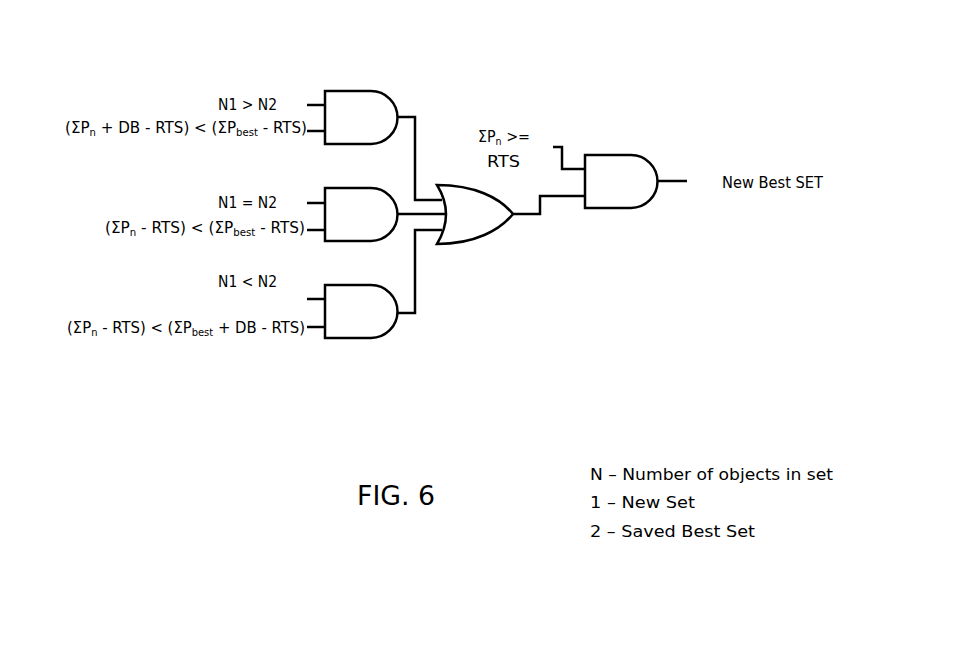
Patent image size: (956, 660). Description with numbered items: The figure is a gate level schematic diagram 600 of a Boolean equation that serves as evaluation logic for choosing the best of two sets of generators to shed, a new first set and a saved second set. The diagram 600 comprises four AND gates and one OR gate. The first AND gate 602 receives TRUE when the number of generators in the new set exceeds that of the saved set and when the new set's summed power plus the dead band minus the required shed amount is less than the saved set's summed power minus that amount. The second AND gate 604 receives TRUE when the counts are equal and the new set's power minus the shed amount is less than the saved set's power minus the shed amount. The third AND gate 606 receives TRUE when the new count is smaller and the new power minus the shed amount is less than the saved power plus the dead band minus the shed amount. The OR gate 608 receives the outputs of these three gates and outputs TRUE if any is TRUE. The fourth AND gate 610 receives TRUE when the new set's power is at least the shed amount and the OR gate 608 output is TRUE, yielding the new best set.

The gate level schematic diagram 600 is at (96, 62).
The first AND gate 602 is at (395, 112).
The second AND gate 604 is at (377, 188).
The third AND gate 606 is at (392, 328).
The OR gate 608 is at (502, 230).
The fourth AND gate 610 is at (643, 158).